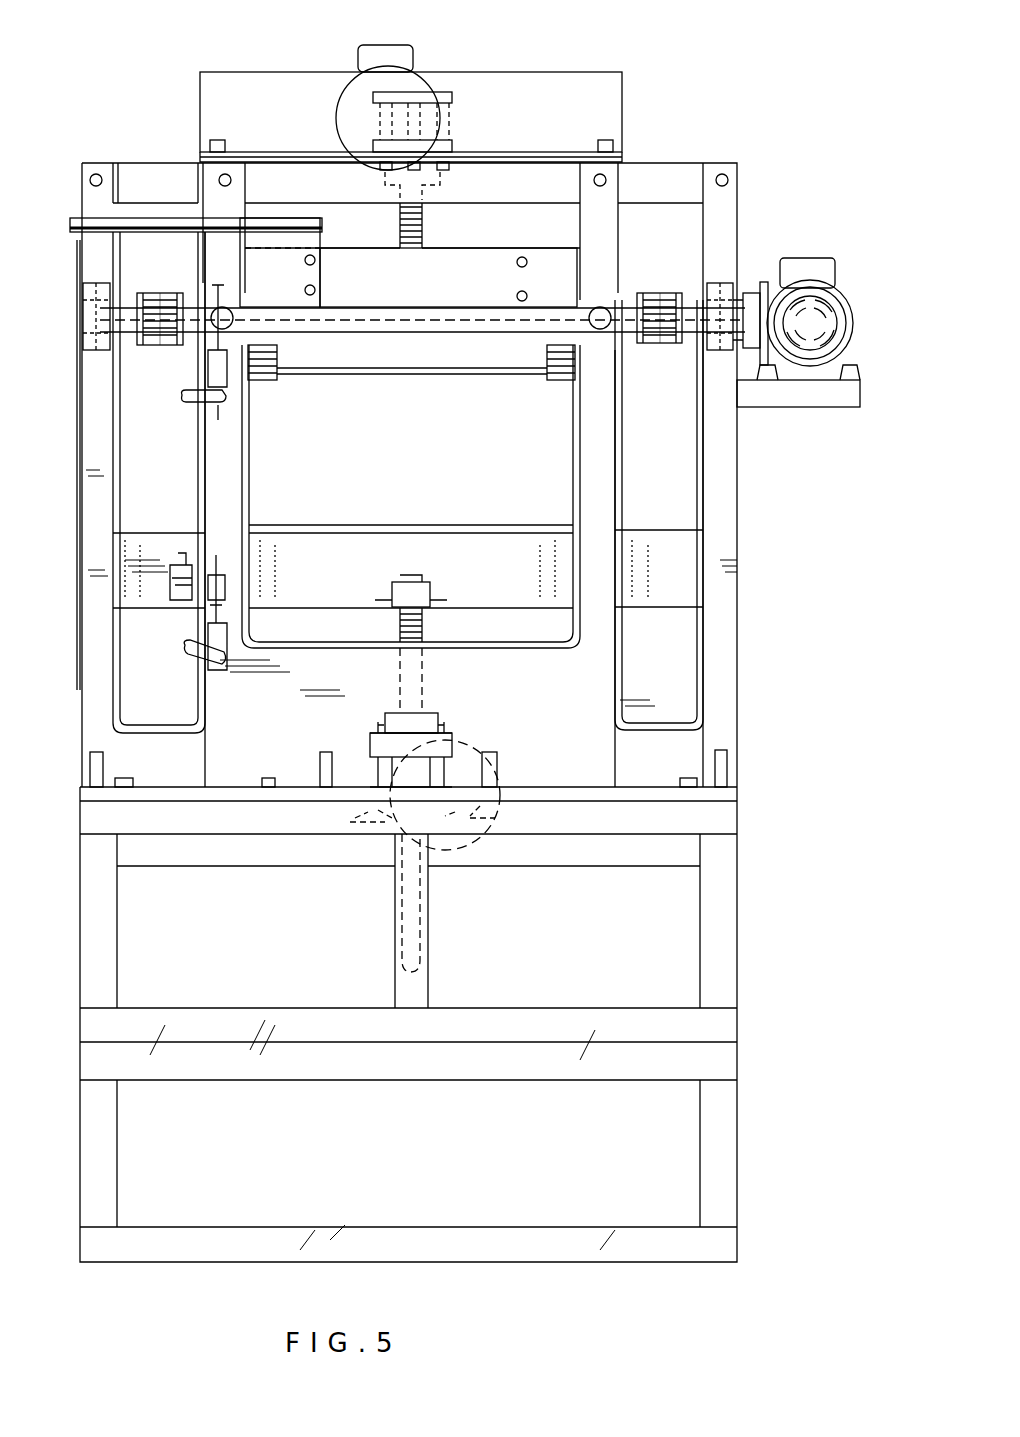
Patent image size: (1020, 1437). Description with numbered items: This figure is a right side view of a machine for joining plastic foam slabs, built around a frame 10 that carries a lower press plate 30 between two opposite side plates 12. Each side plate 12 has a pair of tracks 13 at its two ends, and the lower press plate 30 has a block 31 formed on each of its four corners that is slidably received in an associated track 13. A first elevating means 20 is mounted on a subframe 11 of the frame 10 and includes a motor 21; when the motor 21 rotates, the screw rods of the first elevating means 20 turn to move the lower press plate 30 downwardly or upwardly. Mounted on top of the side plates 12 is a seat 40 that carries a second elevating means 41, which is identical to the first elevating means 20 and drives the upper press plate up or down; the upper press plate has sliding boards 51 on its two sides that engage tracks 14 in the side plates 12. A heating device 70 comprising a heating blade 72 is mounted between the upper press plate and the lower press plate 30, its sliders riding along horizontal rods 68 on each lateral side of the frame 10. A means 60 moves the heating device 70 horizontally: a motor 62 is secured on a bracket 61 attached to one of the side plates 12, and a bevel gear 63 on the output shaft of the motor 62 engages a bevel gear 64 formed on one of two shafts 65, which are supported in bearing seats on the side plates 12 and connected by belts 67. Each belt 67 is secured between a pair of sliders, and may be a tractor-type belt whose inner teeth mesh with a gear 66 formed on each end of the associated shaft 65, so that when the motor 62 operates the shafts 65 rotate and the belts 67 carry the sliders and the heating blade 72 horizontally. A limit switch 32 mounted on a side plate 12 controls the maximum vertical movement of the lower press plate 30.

The frame 10 is at (765, 915).
The subframe 11 is at (535, 828).
The side plate 12 is at (720, 720).
The track 13 is at (700, 662).
The track 14 is at (580, 405).
The first elevating means 20 is at (505, 735).
The motor 21 is at (462, 730).
The lower press plate 30 is at (378, 545).
The block 31 is at (683, 565).
The limit switch 32 is at (222, 640).
The seat 40 is at (622, 95).
The second elevating means 41 is at (425, 55).
The sliding board 51 is at (495, 272).
The means for moving the heating device 60 is at (817, 309).
The bracket 61 is at (826, 400).
The motor 62 is at (808, 257).
The bevel gear 63 is at (850, 312).
The bevel gear 64 is at (775, 292).
The shaft 65 is at (375, 315).
The gear 66 is at (167, 342).
The belt 67 is at (162, 292).
The horizontal rod 68 is at (270, 400).
The heating device 70 is at (445, 390).
The heating blade 72 is at (478, 370).